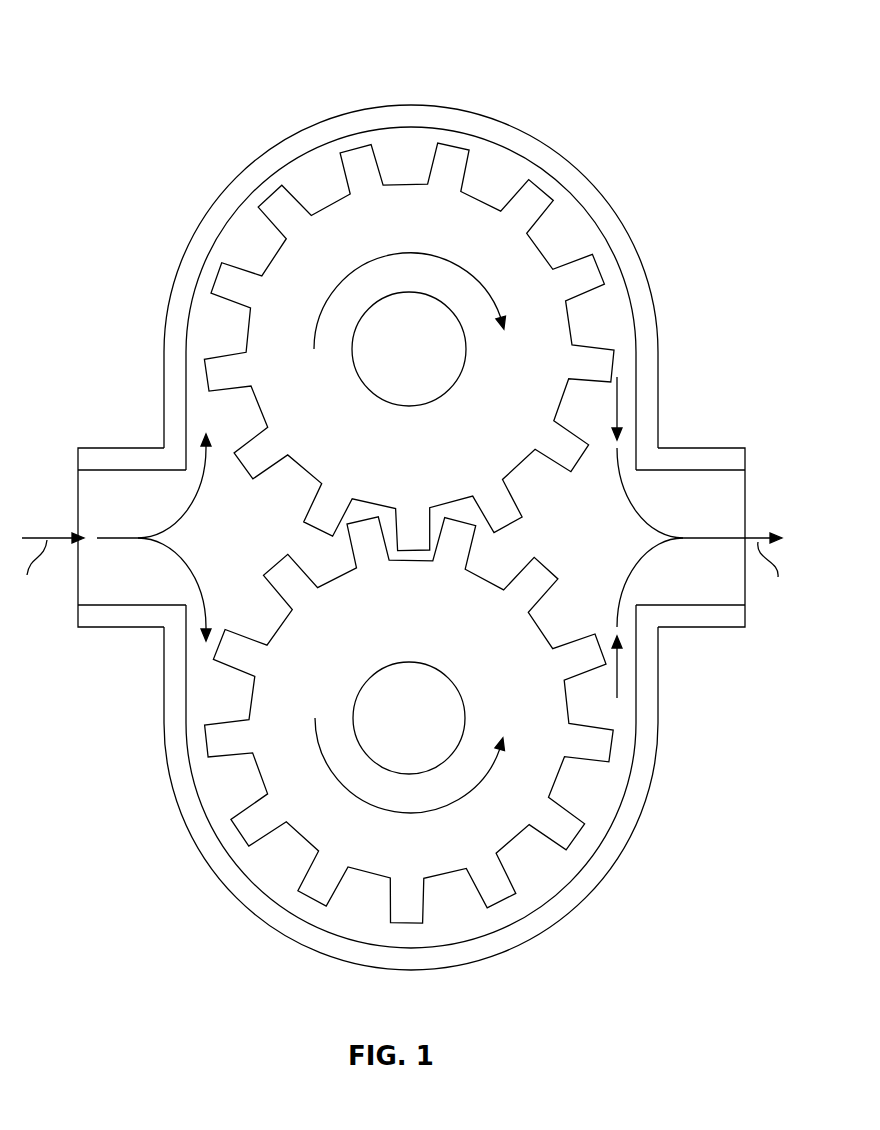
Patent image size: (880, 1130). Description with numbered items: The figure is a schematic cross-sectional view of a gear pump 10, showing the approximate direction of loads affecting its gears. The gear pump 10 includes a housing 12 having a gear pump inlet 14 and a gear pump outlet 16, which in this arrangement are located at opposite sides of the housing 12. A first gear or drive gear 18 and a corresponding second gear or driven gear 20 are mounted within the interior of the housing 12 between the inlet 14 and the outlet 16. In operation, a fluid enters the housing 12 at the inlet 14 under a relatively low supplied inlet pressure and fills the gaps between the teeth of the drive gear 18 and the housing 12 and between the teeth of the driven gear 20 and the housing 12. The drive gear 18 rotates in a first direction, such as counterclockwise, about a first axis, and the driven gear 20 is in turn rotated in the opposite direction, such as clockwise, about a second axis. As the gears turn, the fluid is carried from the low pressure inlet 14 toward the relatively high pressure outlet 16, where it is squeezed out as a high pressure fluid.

The gear pump 10 is at (181, 43).
The housing 12 is at (570, 162).
The gear pump inlet 14 is at (92, 470).
The gear pump outlet 16 is at (728, 472).
The drive gear 18 is at (310, 790).
The driven gear 20 is at (468, 227).